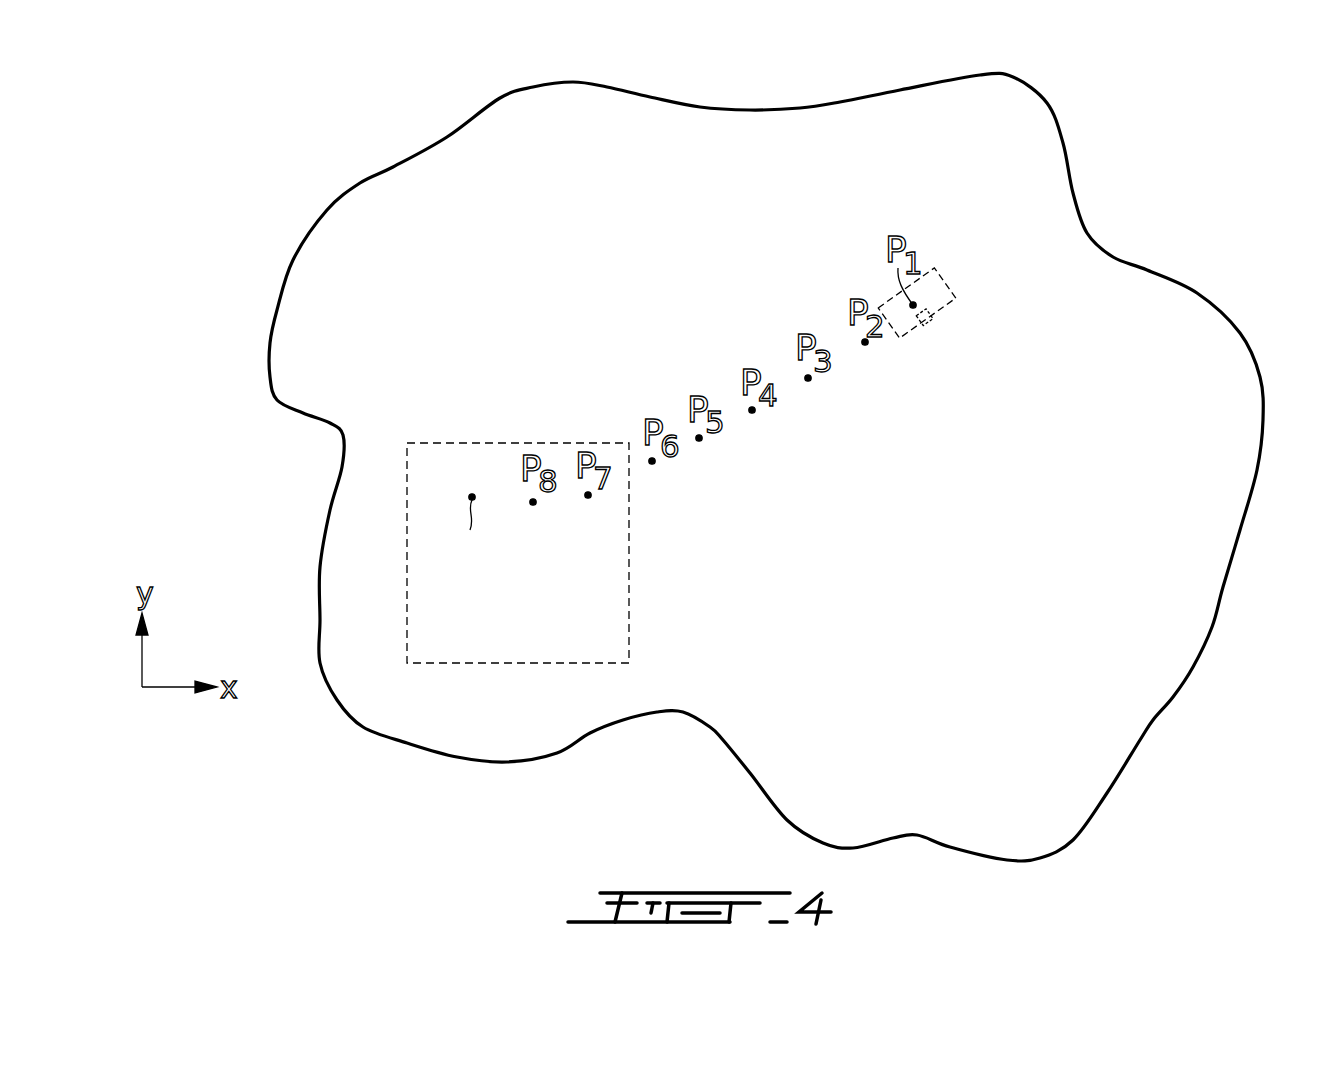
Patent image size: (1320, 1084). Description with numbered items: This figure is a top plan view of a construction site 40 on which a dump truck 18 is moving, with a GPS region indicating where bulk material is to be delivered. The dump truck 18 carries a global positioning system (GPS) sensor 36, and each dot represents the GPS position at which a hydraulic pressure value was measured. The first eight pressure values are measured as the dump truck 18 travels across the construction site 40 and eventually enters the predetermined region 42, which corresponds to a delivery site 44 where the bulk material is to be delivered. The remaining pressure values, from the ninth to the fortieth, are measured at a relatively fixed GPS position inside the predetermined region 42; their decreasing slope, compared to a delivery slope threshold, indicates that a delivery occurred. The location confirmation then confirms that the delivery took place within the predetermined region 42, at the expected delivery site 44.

The construction site 40 is at (375, 223).
The dump truck 18 is at (928, 310).
The global positioning system (GPS) sensor 36 is at (907, 335).
The predetermined region 42 is at (407, 527).
The delivery site 44 is at (527, 627).